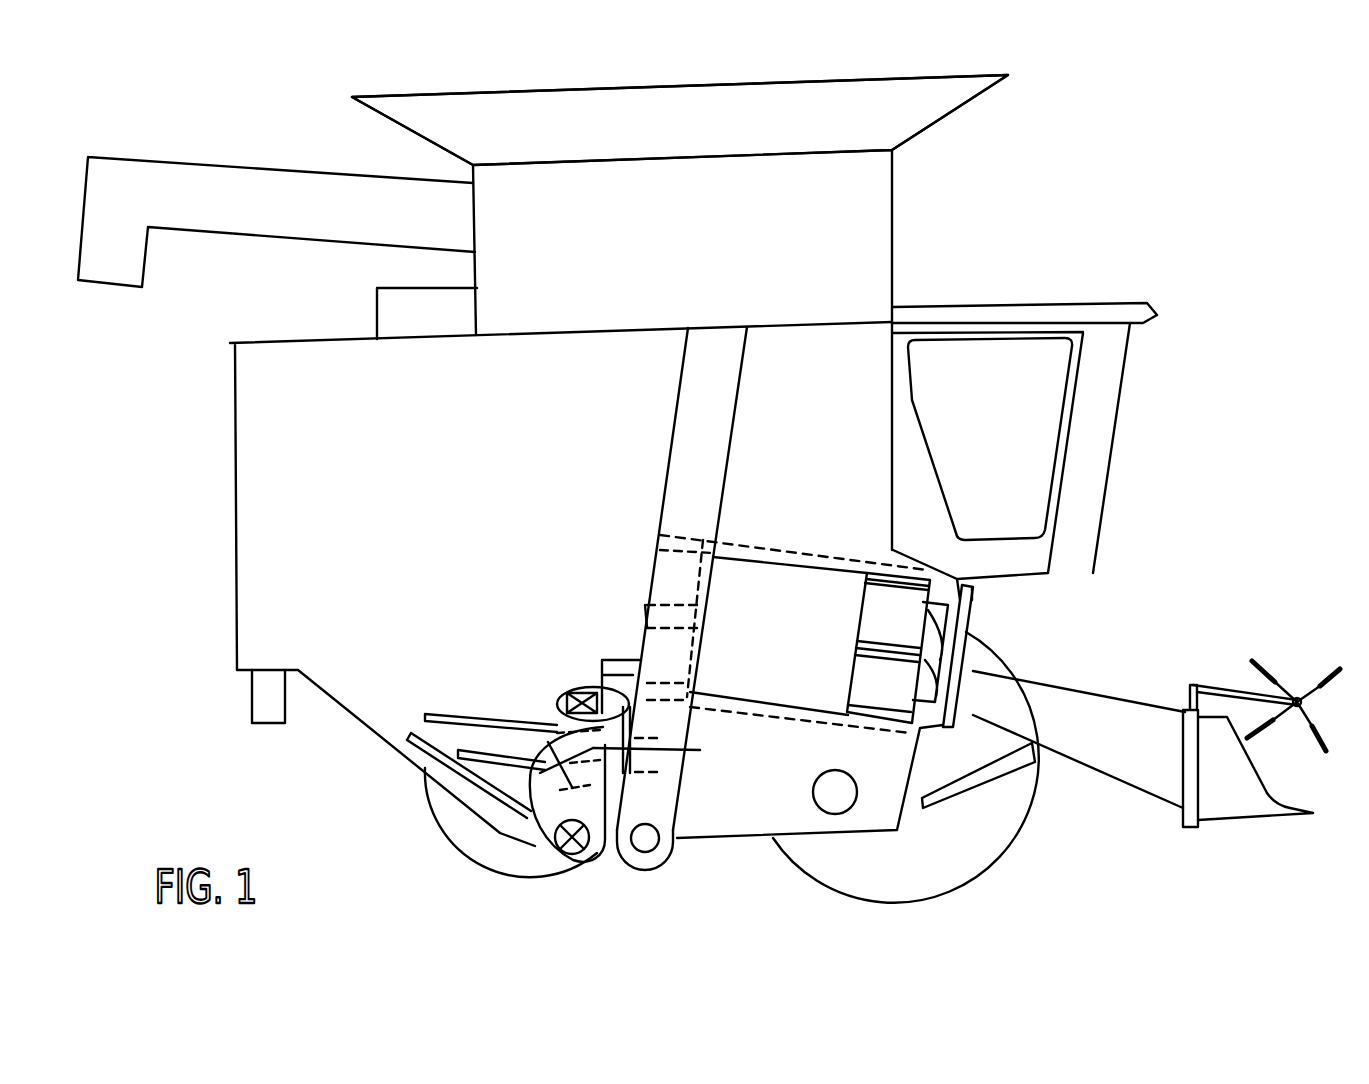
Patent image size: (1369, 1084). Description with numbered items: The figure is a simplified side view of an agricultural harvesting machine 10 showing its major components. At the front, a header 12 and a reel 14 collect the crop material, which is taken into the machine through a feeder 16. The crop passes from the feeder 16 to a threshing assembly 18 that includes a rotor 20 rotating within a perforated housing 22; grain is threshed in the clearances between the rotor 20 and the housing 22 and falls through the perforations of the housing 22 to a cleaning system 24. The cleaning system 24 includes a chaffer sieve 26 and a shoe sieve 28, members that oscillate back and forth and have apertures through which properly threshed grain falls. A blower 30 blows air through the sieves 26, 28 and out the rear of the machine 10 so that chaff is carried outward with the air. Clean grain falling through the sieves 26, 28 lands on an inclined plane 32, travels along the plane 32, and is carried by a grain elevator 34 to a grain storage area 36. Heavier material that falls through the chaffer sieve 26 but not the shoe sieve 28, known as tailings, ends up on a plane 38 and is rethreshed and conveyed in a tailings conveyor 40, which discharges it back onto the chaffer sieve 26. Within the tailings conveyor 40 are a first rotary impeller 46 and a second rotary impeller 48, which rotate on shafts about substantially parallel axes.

The agricultural harvesting machine 10 is at (1247, 433).
The header 12 is at (1227, 800).
The reel 14 is at (1305, 687).
The feeder 16 is at (1067, 703).
The threshing assembly 18 is at (790, 567).
The rotor 20 is at (917, 620).
The perforated housing 22 is at (843, 553).
The cleaning system 24 is at (536, 662).
The chaffer sieve 26 is at (447, 713).
The shoe sieve 28 is at (503, 757).
The blower 30 is at (858, 790).
The inclined plane 32 is at (522, 820).
The grain elevator 34 is at (692, 450).
The grain storage area 36 is at (913, 108).
The plane 38 is at (453, 793).
The tailings conveyor 40 is at (570, 860).
The first rotary impeller 46 is at (543, 845).
The second rotary impeller 48 is at (664, 751).